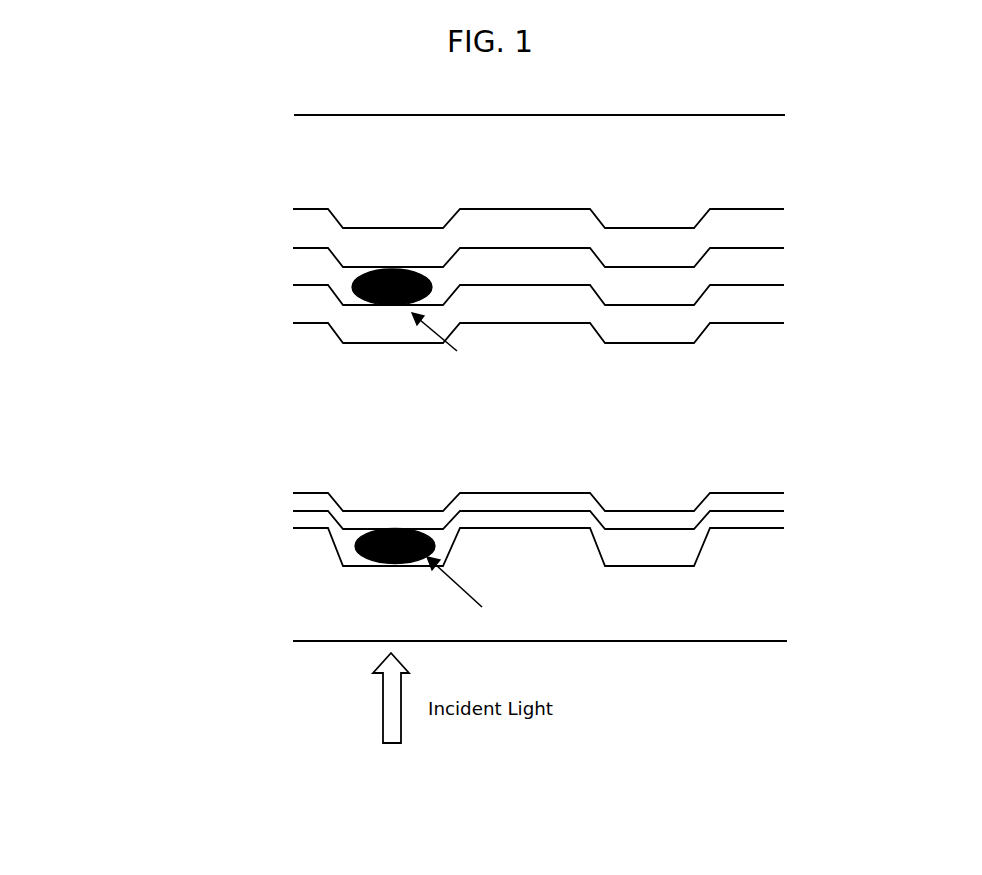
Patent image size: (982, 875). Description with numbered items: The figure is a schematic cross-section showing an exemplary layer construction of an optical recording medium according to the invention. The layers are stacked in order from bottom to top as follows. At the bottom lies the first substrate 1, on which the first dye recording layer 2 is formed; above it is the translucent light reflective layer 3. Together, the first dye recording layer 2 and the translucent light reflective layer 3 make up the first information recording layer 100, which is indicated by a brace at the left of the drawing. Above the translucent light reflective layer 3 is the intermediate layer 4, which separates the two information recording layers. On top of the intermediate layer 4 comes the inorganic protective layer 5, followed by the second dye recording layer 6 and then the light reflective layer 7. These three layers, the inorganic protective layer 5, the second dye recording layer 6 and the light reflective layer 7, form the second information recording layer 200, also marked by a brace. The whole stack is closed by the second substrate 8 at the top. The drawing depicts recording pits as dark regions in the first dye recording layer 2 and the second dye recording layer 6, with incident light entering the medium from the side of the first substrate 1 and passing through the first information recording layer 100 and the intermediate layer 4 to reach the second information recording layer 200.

The first substrate 1 is at (768, 593).
The first dye recording layer 2 is at (770, 525).
The translucent light reflective layer 3 is at (772, 502).
The intermediate layer 4 is at (768, 426).
The inorganic protective layer 5 is at (767, 311).
The second dye recording layer 6 is at (767, 272).
The light reflective layer 7 is at (767, 235).
The second substrate 8 is at (767, 163).
The first information recording layer 100 is at (288, 493).
The second information recording layer 200 is at (288, 330).